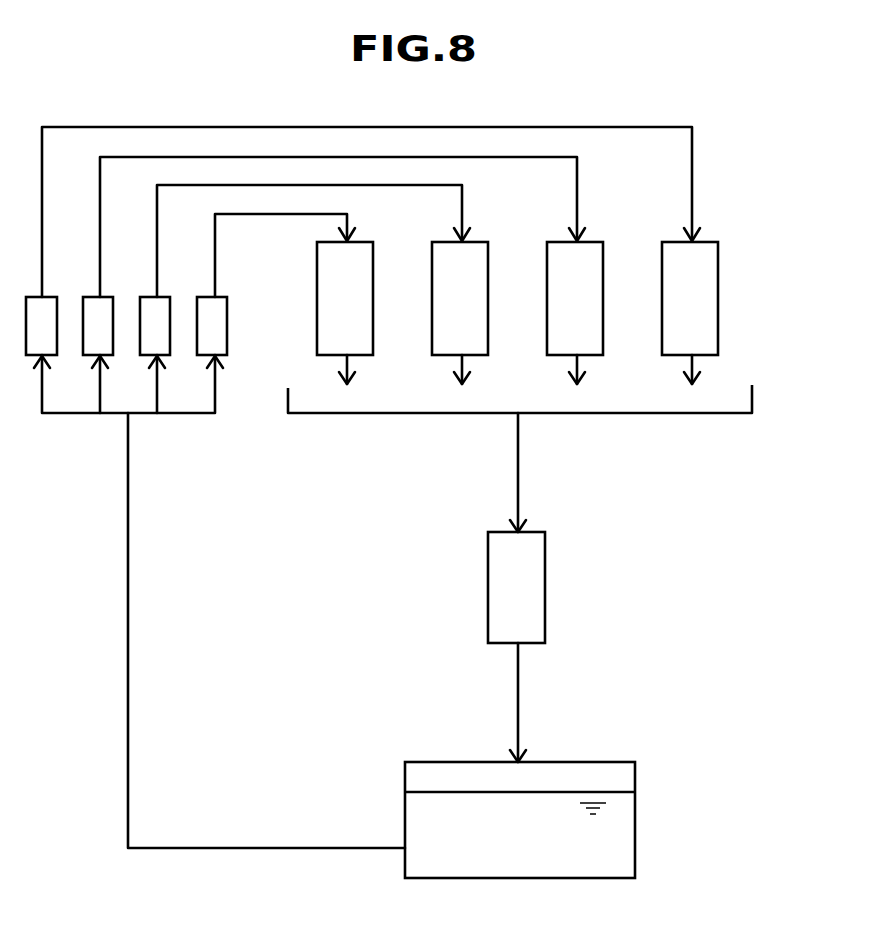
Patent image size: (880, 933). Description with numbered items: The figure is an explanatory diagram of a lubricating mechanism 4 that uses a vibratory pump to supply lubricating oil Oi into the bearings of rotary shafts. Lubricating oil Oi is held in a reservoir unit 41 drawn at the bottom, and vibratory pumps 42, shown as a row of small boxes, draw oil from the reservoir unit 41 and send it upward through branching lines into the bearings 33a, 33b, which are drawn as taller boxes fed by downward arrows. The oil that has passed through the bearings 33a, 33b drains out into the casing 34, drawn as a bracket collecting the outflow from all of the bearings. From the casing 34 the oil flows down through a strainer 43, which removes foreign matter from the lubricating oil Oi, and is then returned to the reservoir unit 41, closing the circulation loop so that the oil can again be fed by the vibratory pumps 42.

The oil supply system 4 is at (662, 558).
The bearing 33a is at (402, 298).
The bearing 33b is at (632, 298).
The casing 34 is at (752, 405).
The reservoir unit 41 is at (635, 778).
The vibratory pump 42 is at (126, 326).
The strainer 43 is at (545, 610).
The lubricating oil Oi is at (605, 855).